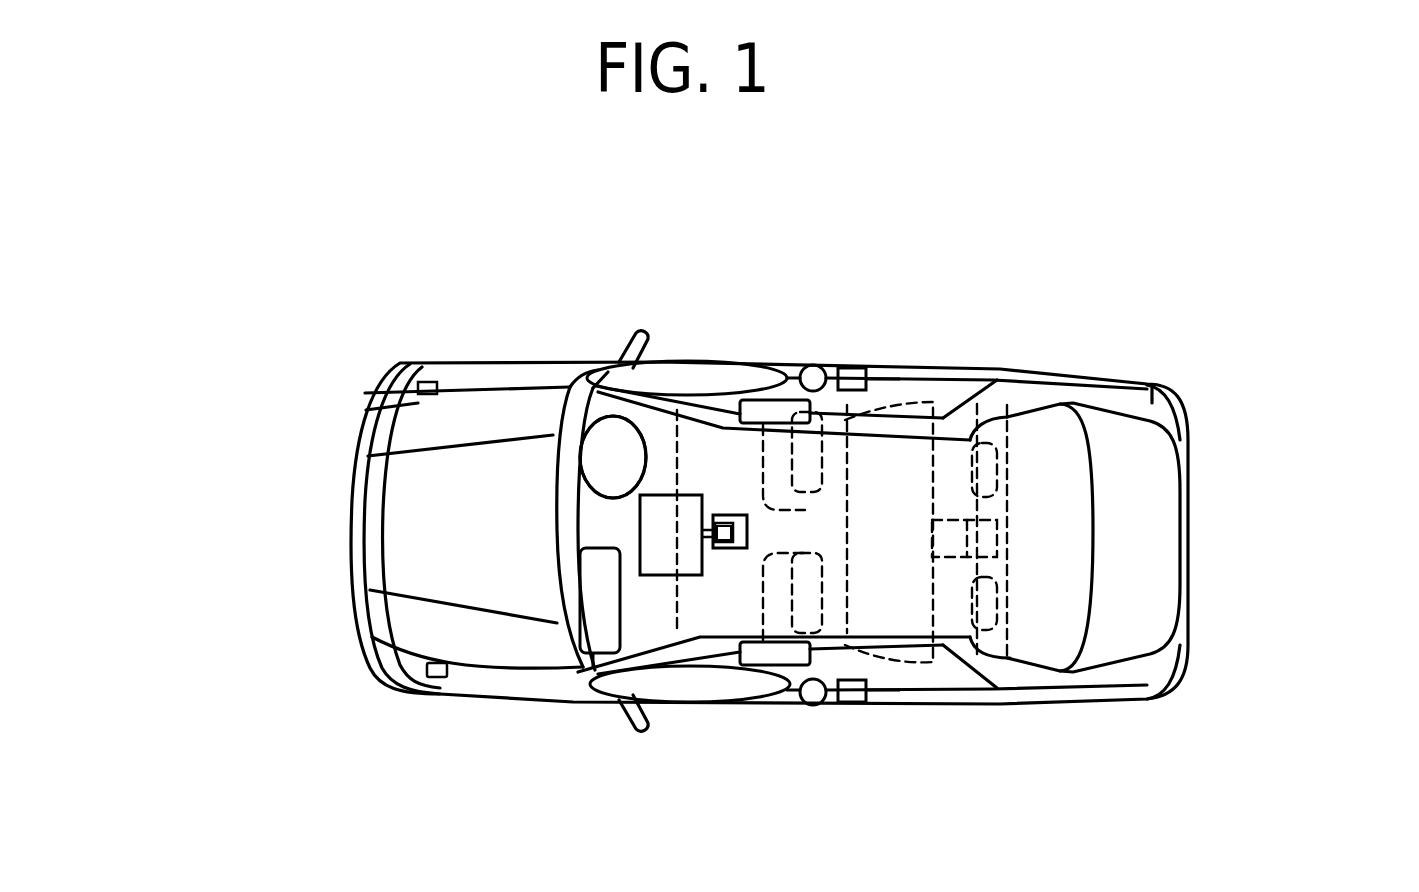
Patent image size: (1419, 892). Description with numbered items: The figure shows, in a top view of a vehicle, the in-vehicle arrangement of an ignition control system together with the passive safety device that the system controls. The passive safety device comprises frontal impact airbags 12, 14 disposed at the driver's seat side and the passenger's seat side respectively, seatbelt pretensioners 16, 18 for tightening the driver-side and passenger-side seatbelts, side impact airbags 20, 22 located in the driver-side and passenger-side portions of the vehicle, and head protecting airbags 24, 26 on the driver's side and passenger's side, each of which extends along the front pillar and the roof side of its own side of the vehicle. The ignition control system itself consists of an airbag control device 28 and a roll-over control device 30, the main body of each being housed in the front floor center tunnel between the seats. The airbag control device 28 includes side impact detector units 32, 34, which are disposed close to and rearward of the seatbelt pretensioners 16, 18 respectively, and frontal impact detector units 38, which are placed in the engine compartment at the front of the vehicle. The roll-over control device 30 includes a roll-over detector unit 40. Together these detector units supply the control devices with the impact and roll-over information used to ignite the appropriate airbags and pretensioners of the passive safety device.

The frontal impact airbag 12 is at (611, 450).
The frontal impact airbag 14 is at (600, 600).
The seatbelt pretensioner 16 is at (815, 367).
The seatbelt pretensioner 18 is at (813, 702).
The side impact airbag 20 is at (783, 412).
The side impact airbag 22 is at (770, 655).
The head protecting airbag 24 is at (701, 382).
The head protecting airbag 26 is at (653, 703).
The airbag control device 28 is at (668, 510).
The roll-over control device 30 is at (750, 532).
The side impact detector unit 32 is at (862, 362).
The side impact detector unit 34 is at (857, 702).
The frontal impact detector unit 38 is at (418, 388).
The roll-over detector unit 40 is at (725, 532).